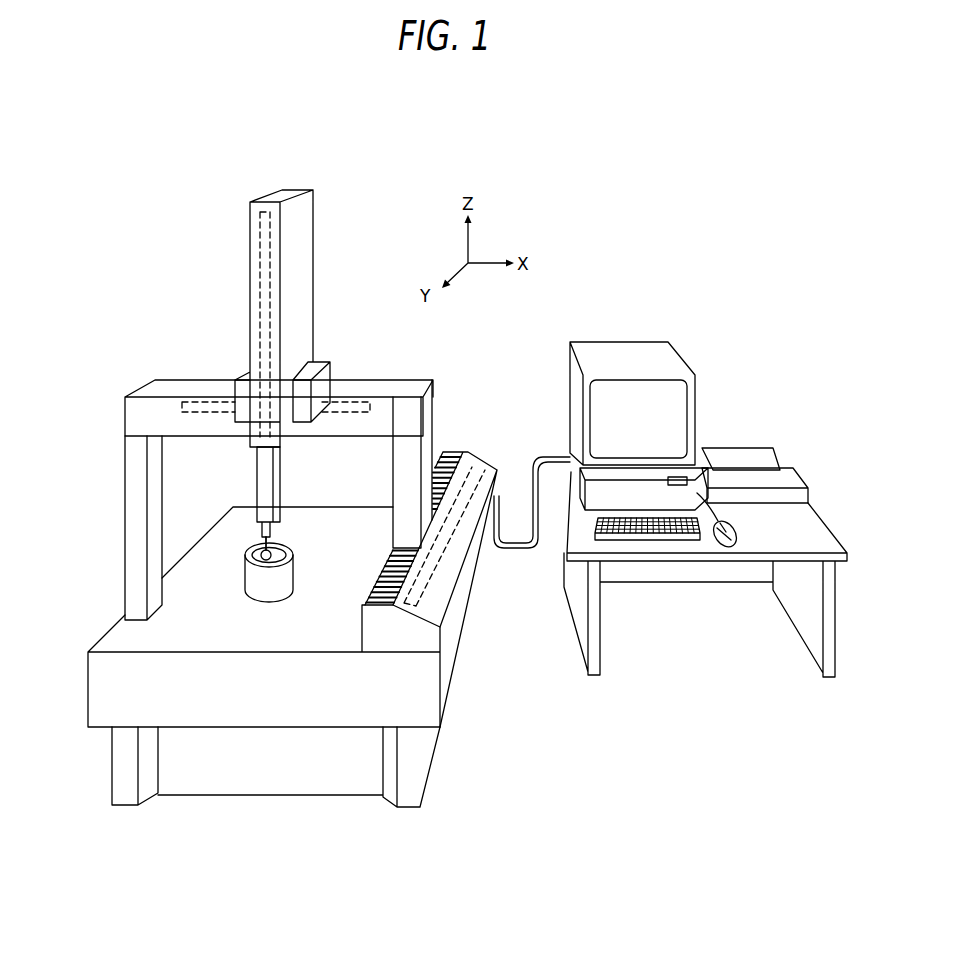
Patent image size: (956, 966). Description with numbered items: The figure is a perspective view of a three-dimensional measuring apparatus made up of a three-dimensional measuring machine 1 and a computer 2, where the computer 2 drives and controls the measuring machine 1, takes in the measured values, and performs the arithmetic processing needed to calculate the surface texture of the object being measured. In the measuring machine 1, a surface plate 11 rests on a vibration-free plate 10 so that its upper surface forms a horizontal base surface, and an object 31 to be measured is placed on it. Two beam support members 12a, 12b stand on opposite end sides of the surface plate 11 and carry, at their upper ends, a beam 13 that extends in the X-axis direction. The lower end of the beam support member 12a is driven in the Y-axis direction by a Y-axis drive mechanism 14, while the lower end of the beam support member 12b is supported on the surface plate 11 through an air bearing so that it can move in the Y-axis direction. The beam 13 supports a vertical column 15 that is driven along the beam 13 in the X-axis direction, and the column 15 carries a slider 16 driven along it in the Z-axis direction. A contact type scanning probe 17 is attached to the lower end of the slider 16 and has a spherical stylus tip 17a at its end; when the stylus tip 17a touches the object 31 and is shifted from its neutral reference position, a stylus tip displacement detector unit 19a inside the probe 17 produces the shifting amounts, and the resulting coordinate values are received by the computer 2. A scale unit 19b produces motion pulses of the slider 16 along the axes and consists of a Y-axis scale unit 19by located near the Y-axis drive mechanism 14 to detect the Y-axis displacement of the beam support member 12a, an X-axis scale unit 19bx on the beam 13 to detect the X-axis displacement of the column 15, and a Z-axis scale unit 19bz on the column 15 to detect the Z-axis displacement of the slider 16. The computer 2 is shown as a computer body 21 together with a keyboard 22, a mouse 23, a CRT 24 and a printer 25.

The three-dimensional measuring machine 1 is at (343, 260).
The computer 2 is at (748, 368).
The vibration-free plate 10 is at (118, 773).
The surface plate 11 is at (95, 690).
The beam support member 12a is at (430, 408).
The beam support member 12b is at (133, 498).
The beam 13 is at (180, 387).
The Y-axis drive mechanism 14 is at (498, 469).
The column 15 is at (249, 309).
The slider 16 is at (263, 462).
The contact type scanning probe 17 is at (242, 537).
The stylus tip 17a is at (279, 556).
The stylus tip displacement detector unit 19a is at (273, 532).
The scale unit 19b is at (339, 409).
The Z-axis scale unit 19bz is at (260, 243).
The X-axis scale unit 19bx is at (362, 401).
The Y-axis scale unit 19by is at (497, 467).
The computer body 21 is at (570, 460).
The keyboard 22 is at (661, 532).
The mouse 23 is at (740, 549).
The CRT 24 is at (630, 348).
The printer 25 is at (790, 470).
The object to be measured 31 is at (295, 582).